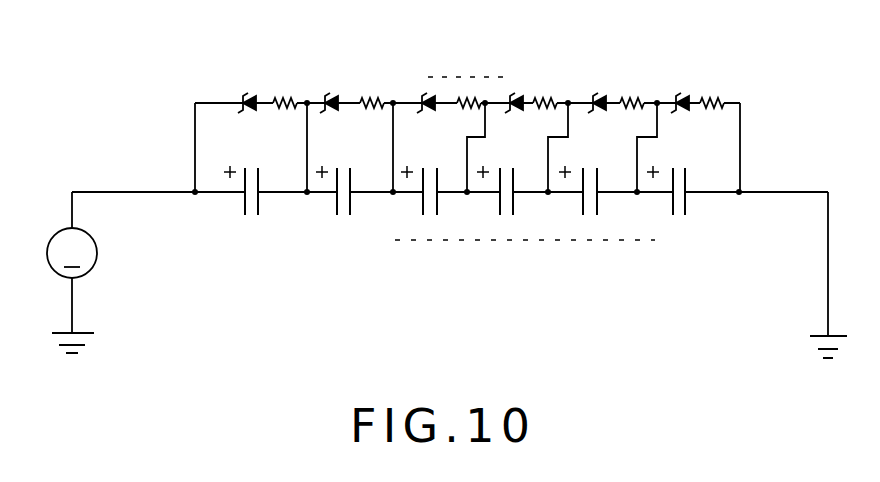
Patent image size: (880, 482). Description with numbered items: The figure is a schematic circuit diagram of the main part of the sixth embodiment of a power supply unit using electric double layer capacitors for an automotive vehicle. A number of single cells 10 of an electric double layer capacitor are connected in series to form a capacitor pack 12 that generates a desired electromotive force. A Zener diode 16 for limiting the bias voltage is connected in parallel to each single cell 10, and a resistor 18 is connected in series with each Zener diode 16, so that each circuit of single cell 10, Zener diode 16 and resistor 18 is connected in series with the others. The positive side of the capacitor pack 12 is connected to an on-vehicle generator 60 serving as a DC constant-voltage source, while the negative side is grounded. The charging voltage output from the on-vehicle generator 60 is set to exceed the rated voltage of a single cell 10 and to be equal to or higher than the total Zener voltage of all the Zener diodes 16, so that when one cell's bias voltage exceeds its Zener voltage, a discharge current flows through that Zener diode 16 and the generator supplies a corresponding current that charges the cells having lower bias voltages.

The single cell 10 is at (245, 212).
The capacitor pack 12 is at (617, 311).
The Zener diode 16 is at (252, 98).
The resistor 18 is at (291, 97).
The on-vehicle generator 60 is at (96, 262).